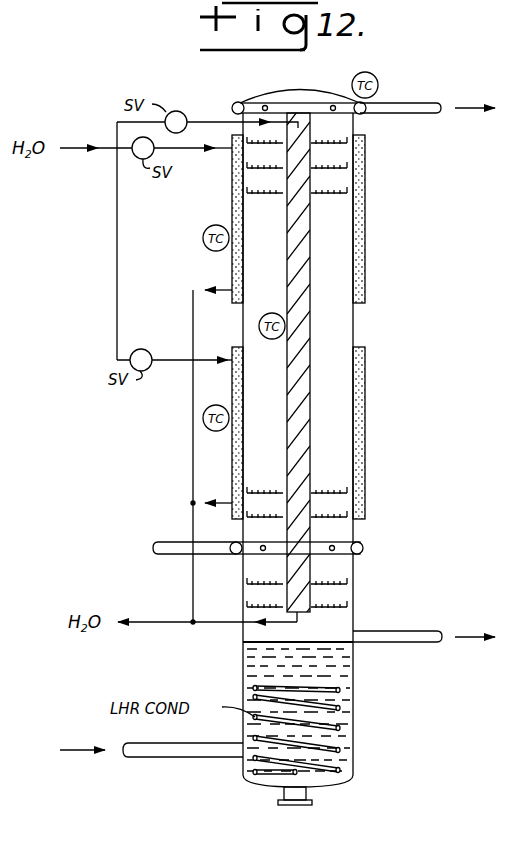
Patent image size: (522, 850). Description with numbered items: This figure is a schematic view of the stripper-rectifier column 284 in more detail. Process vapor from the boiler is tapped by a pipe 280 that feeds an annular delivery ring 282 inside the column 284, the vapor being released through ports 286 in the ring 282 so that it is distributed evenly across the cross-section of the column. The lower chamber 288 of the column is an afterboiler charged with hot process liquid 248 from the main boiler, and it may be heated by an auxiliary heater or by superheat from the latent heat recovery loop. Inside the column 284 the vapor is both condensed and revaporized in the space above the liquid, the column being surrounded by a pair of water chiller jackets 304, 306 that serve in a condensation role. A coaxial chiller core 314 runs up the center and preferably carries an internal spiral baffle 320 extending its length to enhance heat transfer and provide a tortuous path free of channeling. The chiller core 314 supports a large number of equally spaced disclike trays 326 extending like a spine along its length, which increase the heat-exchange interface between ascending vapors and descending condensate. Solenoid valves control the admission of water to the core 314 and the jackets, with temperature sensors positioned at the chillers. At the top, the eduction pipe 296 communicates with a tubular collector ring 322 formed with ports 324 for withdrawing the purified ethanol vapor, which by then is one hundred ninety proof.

The process liquid 248 is at (345, 668).
The pipe 280 is at (162, 541).
The annular delivery ring 282 is at (362, 548).
The stripper-rectifier column 284 is at (358, 334).
The ports 286 is at (333, 551).
The lower chamber 288 is at (350, 718).
The eduction pipe 296 is at (405, 115).
The water chiller jacket 304 is at (366, 233).
The water chiller jacket 306 is at (366, 421).
The coaxial chiller core 314 is at (312, 291).
The internal spiral baffle 320 is at (300, 442).
The tubular collector ring 322 is at (239, 102).
The ports 324 is at (266, 105).
The disclike trays 326 is at (250, 198).